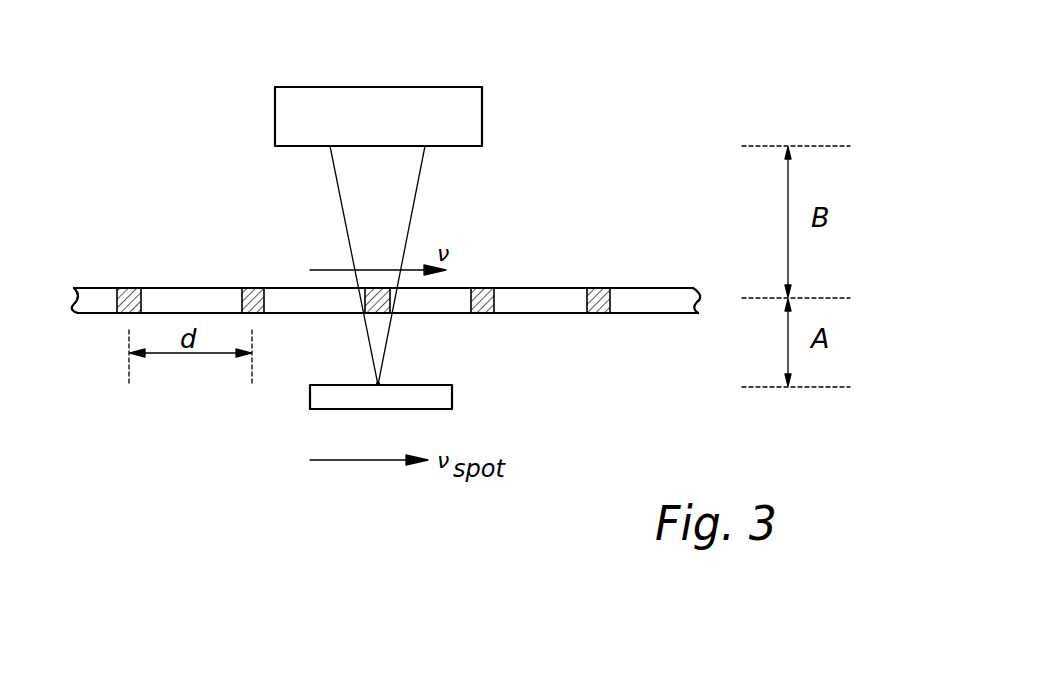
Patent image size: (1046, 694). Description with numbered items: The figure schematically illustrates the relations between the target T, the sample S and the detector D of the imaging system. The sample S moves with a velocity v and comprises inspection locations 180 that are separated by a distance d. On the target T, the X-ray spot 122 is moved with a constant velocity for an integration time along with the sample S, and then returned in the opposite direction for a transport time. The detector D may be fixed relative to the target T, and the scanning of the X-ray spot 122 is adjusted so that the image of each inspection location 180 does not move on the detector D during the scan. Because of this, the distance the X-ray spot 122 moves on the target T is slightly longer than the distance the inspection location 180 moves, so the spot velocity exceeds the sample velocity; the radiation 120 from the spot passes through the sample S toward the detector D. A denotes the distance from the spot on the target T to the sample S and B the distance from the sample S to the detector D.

The detector D is at (378, 87).
The light beam 120 is at (401, 209).
The X-ray spot 122 is at (381, 383).
The inspection locations 180 is at (127, 288).
The sample S is at (626, 242).
The target T is at (452, 397).